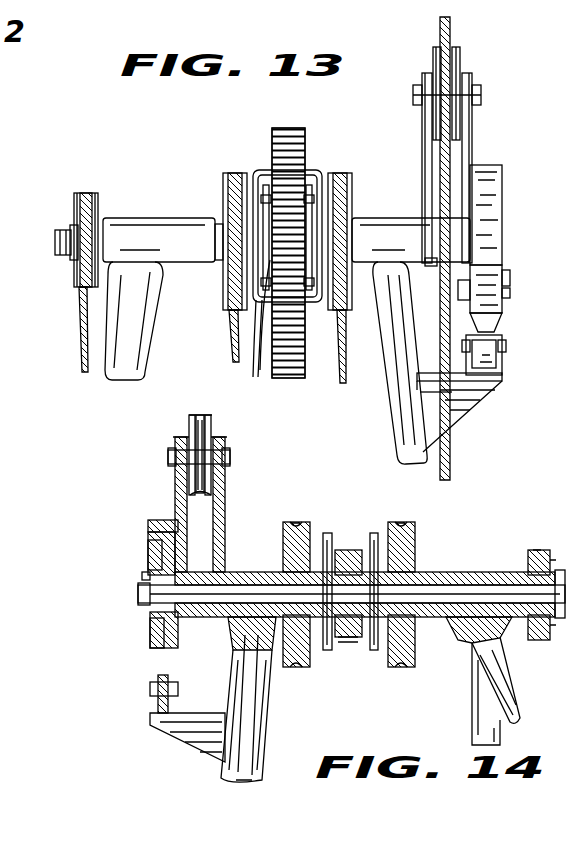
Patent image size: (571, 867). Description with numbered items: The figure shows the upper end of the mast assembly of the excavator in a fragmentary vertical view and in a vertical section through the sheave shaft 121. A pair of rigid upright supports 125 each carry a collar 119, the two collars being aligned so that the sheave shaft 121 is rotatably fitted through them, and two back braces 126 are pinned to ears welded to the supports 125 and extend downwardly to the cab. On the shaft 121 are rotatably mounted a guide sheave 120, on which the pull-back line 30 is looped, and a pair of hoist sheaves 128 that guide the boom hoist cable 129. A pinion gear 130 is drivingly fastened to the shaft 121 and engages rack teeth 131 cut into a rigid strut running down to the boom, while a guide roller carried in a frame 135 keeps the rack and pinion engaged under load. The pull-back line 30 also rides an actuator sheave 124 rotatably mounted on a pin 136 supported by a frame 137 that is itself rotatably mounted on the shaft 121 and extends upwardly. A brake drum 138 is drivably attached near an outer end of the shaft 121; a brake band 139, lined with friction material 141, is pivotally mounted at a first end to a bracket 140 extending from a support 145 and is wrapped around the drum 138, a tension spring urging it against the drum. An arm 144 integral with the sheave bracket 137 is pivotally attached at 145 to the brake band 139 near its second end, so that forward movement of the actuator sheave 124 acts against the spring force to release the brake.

In FIG. 13, the pull-back line 30 is at (81, 360).
In FIG. 14, the pull-back line 30 is at (196, 418).
In FIG. 13, the collar 119 is at (145, 218).
In FIG. 14, the collar 119 is at (262, 552).
In FIG. 13, the guide sheave 120 is at (76, 197).
In FIG. 14, the guide sheave 120 is at (548, 628).
In FIG. 13, the sheave shaft 121 is at (55, 240).
In FIG. 14, the sheave shaft 121 is at (138, 592).
In FIG. 13, the actuator sheave 124 is at (459, 52).
In FIG. 14, the actuator sheave 124 is at (212, 425).
In FIG. 13, the rigid upright support 125 is at (146, 365).
In FIG. 14, the rigid upright support 125 is at (233, 700).
In FIG. 14, the back brace 126 is at (256, 733).
In FIG. 13, the hoist sheave 128 is at (226, 190).
In FIG. 14, the hoist sheave 128 is at (415, 548).
In FIG. 13, the boom hoist cable 129 is at (230, 345).
In FIG. 14, the boom hoist cable 129 is at (294, 523).
In FIG. 13, the pinion gear 130 is at (271, 334).
In FIG. 14, the pinion gear 130 is at (350, 550).
In FIG. 13, the rack teeth 131 is at (305, 140).
In FIG. 13, the frame 135 is at (258, 172).
In FIG. 14, the frame 135 is at (327, 533).
In FIG. 13, the pin 136 is at (413, 95).
In FIG. 14, the pin 136 is at (168, 457).
In FIG. 13, the frame 137 is at (468, 150).
In FIG. 14, the frame 137 is at (175, 497).
In FIG. 14, the brake drum 138 is at (152, 640).
In FIG. 13, the brake band 139 is at (498, 318).
In FIG. 14, the brake band 139 is at (150, 526).
In FIG. 13, the bracket 140 is at (470, 400).
In FIG. 14, the bracket 140 is at (165, 735).
In FIG. 14, the friction material 141 is at (148, 538).
In FIG. 13, the arm 144 is at (505, 295).
In FIG. 13, the pivotal attachment 145 is at (510, 277).